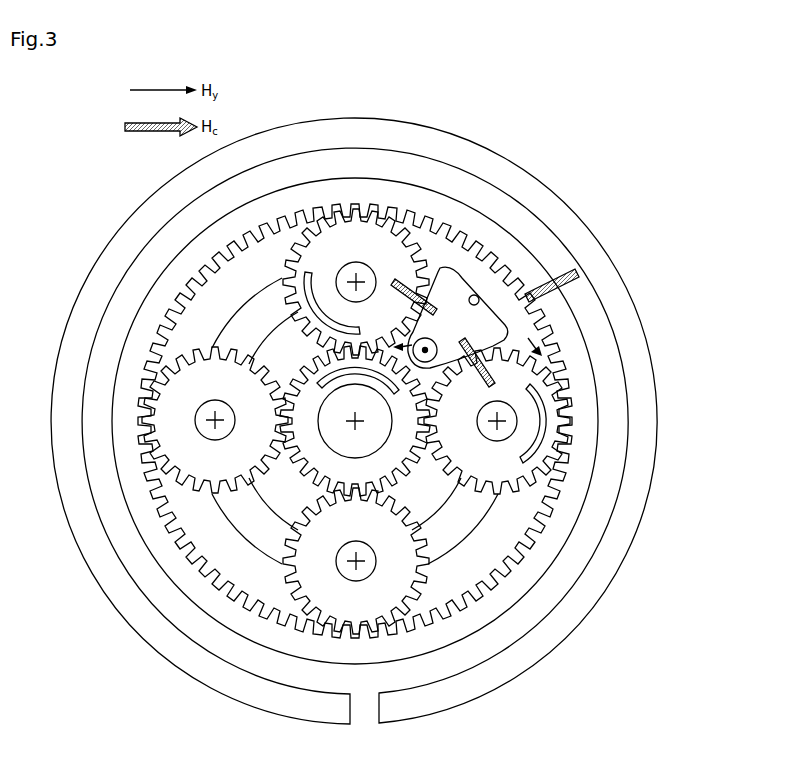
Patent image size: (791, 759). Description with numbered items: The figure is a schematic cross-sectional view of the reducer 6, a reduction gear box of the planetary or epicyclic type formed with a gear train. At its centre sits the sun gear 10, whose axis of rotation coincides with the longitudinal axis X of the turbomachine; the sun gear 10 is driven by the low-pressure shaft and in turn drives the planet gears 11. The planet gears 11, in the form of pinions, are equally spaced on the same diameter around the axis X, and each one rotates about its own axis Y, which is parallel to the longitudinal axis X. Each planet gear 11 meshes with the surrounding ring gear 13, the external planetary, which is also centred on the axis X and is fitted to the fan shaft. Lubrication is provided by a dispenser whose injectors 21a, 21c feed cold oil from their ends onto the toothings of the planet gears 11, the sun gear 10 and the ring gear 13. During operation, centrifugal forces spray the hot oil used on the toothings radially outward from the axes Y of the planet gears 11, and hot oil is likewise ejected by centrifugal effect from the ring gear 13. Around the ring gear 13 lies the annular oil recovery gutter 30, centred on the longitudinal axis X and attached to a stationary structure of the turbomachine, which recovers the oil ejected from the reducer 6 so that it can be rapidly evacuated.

The reducer 6 is at (633, 164).
The oil recovery gutter 30 is at (660, 426).
The ring gear 13 is at (455, 632).
The planet gears 11 is at (558, 415).
The sun gear 10 is at (323, 462).
The longitudinal axis X is at (358, 423).
The axis of the planet gear Y is at (212, 423).
The injectors 21a is at (582, 270).
The pawl guide pins 21c is at (528, 324).